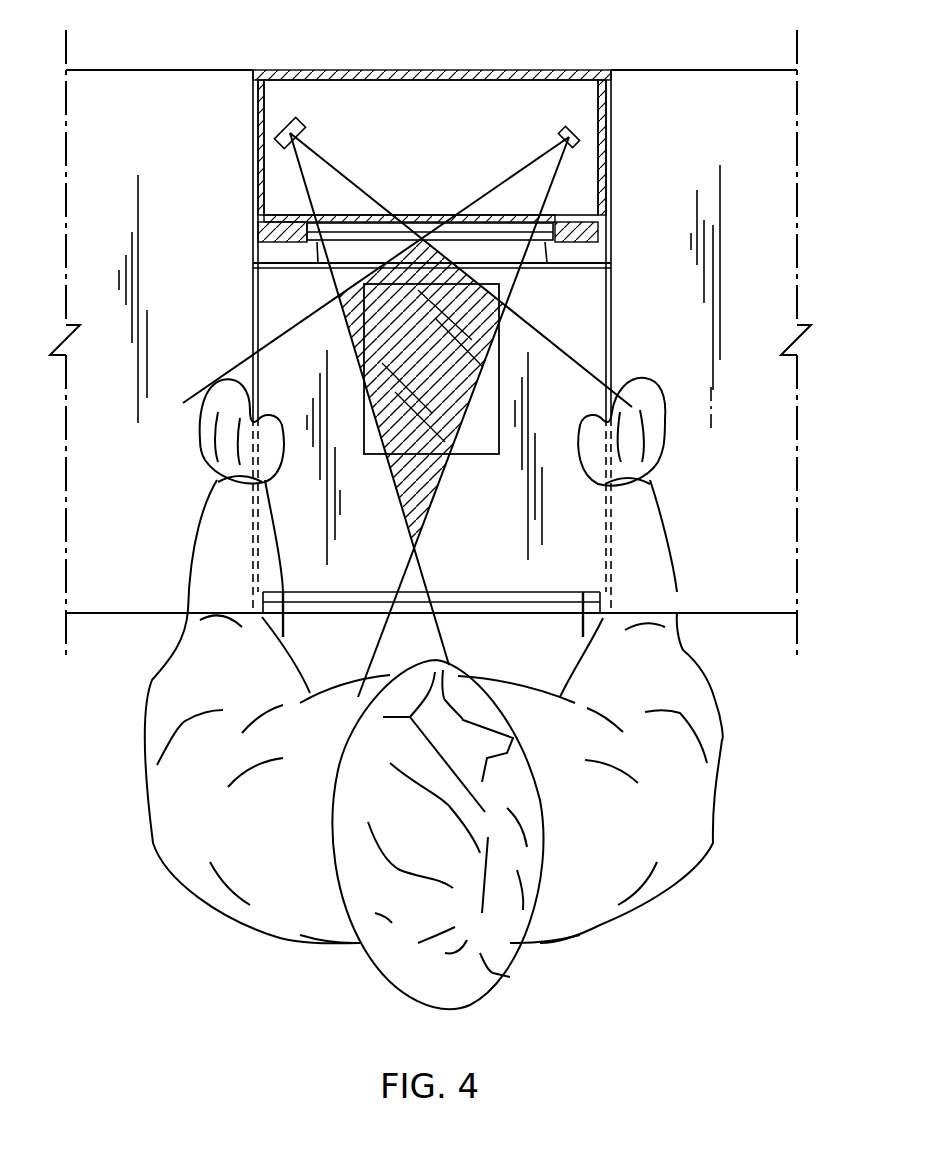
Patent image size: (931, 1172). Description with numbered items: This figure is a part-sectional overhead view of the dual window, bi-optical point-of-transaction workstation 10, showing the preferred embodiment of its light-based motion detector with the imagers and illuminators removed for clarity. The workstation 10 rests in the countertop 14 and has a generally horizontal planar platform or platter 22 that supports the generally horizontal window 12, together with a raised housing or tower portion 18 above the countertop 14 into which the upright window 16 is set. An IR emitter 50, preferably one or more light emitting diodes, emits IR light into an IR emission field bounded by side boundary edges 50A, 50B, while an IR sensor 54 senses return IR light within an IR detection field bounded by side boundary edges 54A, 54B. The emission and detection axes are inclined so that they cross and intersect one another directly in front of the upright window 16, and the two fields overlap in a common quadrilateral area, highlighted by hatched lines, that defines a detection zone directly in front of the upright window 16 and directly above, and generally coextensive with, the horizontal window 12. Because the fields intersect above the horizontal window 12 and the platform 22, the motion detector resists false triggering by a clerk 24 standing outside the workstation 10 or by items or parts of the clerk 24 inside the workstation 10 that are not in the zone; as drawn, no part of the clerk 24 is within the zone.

The point-of-transaction workstation 10 is at (618, 82).
The generally horizontal window 12 is at (374, 452).
The countertop 14 is at (726, 70).
The upright window 16 is at (410, 222).
The raised housing or tower portion 18 is at (612, 107).
The platform or platter 22 is at (597, 279).
The clerk 24 is at (150, 797).
The IR emitter 50 is at (562, 130).
The side boundary edge of IR emission field 50A is at (238, 358).
The side boundary edge of IR emission field 50B is at (515, 292).
The IR sensor 54 is at (304, 122).
The side boundary edge of IR detection field 54A is at (333, 143).
The side boundary edge of IR detection field 54B is at (298, 180).